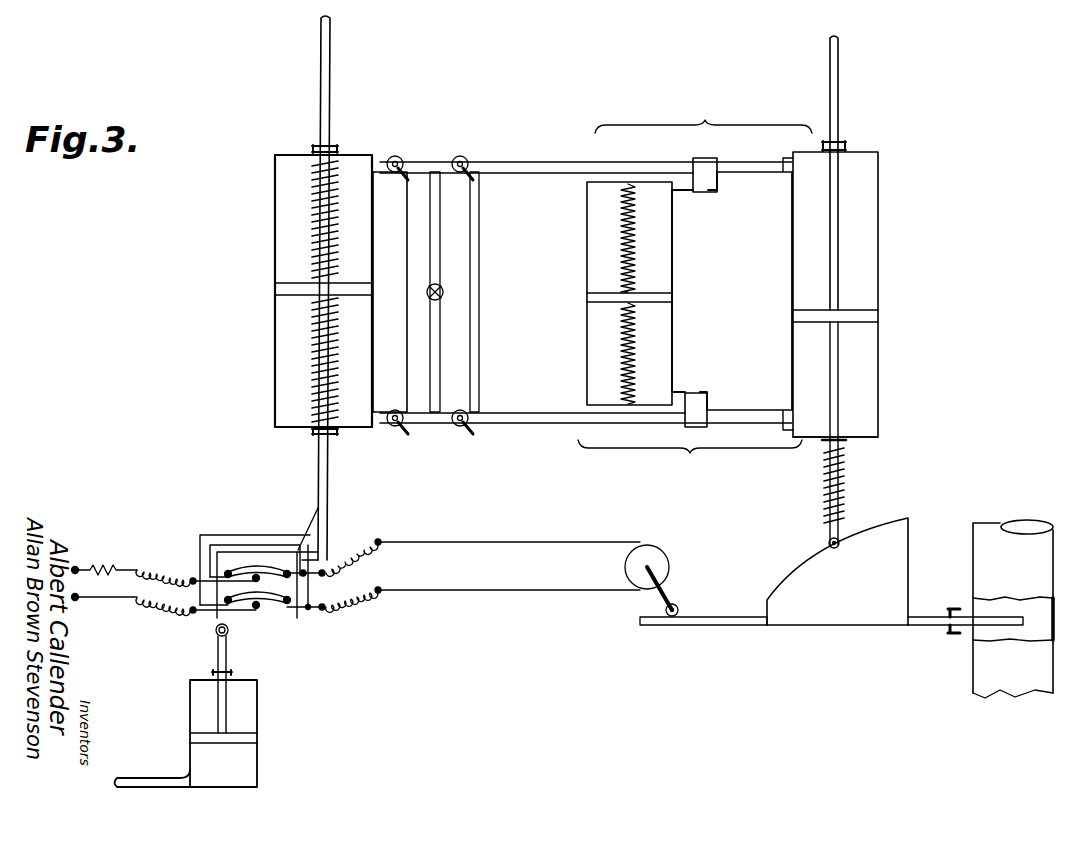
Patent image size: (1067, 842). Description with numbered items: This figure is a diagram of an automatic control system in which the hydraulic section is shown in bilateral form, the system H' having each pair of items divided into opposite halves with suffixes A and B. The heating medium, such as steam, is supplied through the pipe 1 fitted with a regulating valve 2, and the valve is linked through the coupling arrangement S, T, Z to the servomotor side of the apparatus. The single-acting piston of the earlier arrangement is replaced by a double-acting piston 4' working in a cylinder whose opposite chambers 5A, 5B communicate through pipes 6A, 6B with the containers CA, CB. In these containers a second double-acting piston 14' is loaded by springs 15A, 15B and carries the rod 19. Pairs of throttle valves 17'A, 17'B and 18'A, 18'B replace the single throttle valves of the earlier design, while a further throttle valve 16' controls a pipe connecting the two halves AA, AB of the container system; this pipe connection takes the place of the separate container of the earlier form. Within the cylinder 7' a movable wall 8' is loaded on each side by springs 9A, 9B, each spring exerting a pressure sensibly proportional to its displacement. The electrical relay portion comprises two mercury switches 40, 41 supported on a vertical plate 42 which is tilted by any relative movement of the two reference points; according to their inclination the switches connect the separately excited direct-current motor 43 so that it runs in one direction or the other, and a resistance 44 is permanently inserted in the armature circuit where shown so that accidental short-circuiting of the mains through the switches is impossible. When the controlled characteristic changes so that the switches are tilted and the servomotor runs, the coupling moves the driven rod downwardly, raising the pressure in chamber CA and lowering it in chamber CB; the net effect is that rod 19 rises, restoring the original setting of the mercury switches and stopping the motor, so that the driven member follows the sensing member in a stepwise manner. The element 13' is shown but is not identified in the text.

The cylinder body 13' is at (301, 291).
The container half CB is at (275, 218).
The container half CA is at (275, 375).
The double-acting piston 14' is at (323, 277).
The spring 15B is at (330, 232).
The spring 15A is at (331, 356).
The rod 19 is at (328, 495).
The throttle valve 18'B is at (392, 151).
The throttle valve 17'B is at (461, 151).
The throttle valve 18'A is at (395, 438).
The throttle valve 17'A is at (463, 438).
The throttle valve 16' is at (448, 280).
The cylinder 7' is at (610, 293).
The movable wall 8' is at (629, 312).
The spring 9B is at (636, 240).
The spring 9A is at (636, 350).
The pipe 6B is at (706, 166).
The pipe 6A is at (704, 427).
The container half AB is at (703, 120).
The container half AA is at (690, 461).
The hydraulic system H' is at (546, 87).
The cylinder chamber 5B is at (878, 255).
The cylinder chamber 5A is at (878, 365).
The double-acting piston 4' is at (835, 290).
The coupling arrangement element Z is at (829, 543).
The coupling arrangement element S is at (856, 625).
The coupling arrangement element T is at (872, 535).
The regulating valve 2 is at (1005, 628).
The pipe 1 is at (973, 546).
The D.C. motor 43 is at (666, 560).
The vertical plate 42 is at (258, 552).
The mercury switch 40 is at (228, 566).
The mercury switch 41 is at (270, 610).
The resistance 44 is at (103, 565).